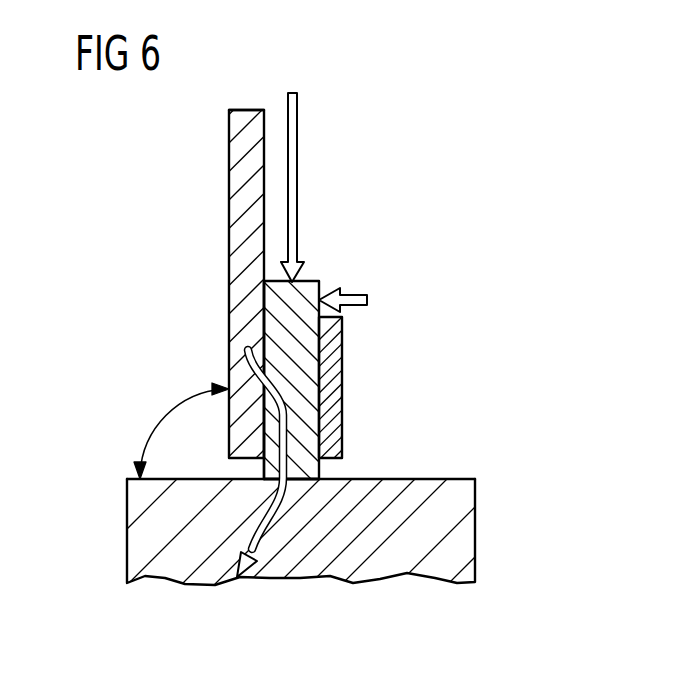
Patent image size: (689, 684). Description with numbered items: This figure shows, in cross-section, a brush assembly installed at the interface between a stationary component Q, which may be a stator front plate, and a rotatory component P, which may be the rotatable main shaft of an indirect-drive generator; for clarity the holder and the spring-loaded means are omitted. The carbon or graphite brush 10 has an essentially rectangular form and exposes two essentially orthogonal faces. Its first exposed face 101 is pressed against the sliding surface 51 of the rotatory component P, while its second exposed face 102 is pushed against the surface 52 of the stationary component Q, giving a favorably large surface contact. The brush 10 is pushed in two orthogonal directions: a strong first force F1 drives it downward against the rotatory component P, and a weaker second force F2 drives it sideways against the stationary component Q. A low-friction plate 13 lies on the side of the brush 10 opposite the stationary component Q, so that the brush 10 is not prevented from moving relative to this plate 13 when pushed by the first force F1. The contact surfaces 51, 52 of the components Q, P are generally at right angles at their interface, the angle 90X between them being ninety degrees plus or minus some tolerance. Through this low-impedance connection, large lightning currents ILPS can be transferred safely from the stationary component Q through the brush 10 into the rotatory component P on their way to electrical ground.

The surface of the stationary component 52 is at (274, 119).
The stationary component Q is at (238, 208).
The brush 10 is at (310, 289).
The low-friction plate 13 is at (334, 358).
The second face 102 is at (264, 301).
The first face 101 is at (302, 484).
The surface of the rotatory component 51 is at (462, 479).
The rotatory component P is at (466, 540).
The first force F1 is at (298, 176).
The second force F2 is at (355, 292).
The lightning current ILPS is at (251, 549).
The angle between contact surfaces 90X is at (170, 408).